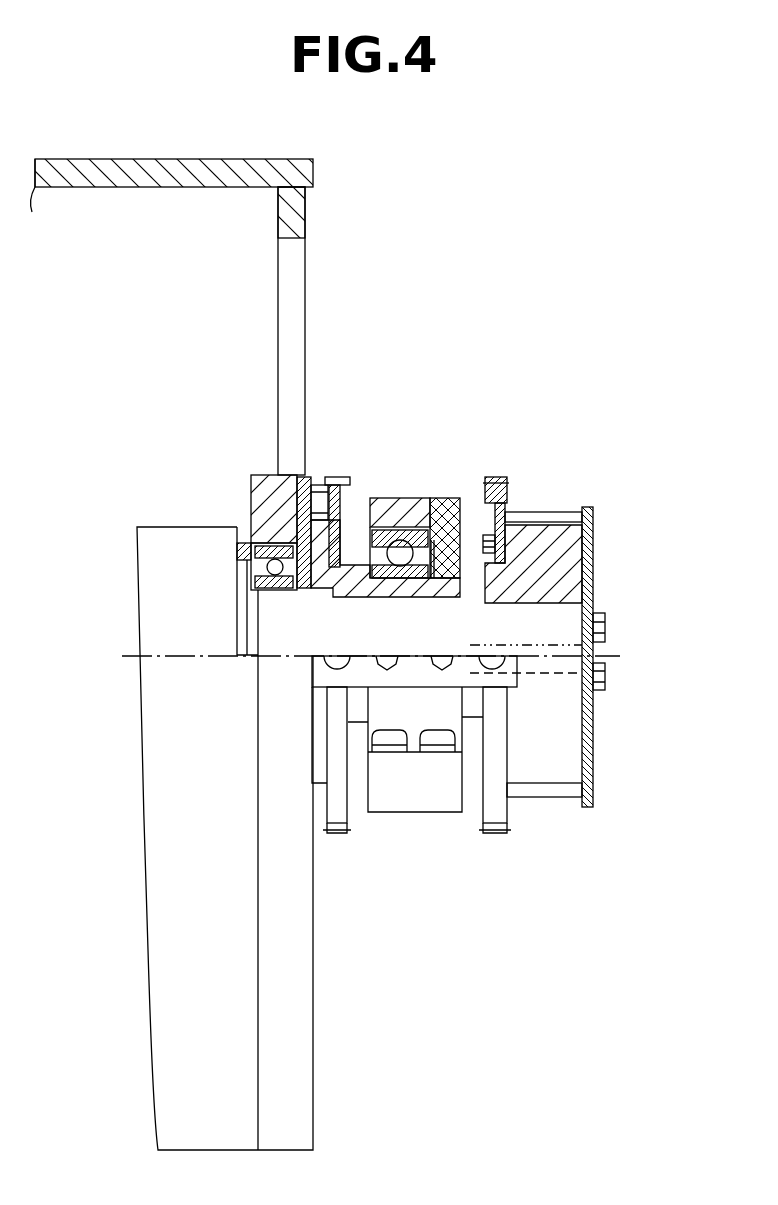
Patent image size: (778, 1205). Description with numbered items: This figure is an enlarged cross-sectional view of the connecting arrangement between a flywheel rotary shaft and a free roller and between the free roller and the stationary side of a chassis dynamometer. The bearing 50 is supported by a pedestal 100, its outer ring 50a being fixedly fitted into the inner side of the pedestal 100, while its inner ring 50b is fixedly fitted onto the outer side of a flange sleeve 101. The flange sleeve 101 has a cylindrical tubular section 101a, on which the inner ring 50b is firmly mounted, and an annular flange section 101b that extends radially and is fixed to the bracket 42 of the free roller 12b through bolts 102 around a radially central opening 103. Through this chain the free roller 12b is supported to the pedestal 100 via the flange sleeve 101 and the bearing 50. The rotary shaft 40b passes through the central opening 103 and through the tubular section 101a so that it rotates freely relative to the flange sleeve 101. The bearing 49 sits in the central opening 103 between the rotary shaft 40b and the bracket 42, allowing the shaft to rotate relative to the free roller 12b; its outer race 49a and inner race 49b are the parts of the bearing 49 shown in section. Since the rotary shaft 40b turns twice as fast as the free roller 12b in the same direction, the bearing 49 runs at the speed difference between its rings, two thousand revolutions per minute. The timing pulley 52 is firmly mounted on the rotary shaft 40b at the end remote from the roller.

The free roller 12b is at (162, 170).
The bracket 42 is at (295, 210).
The bolts 102 is at (316, 476).
The annular flange section 101b is at (346, 520).
The cylindrical tubular section 101a is at (356, 576).
The flange sleeve 101 is at (440, 395).
The radially central opening 103 is at (247, 550).
The outer ring 50a is at (440, 512).
The inner ring 50b is at (462, 522).
The bearing 50 is at (540, 509).
The timing pulley 52 is at (570, 563).
The bearing 49 is at (167, 585).
The outer race of bearing 49a is at (253, 560).
The inner race of bearing 49b is at (253, 585).
The rotary shaft 40b is at (203, 638).
The pedestal 100 is at (427, 797).